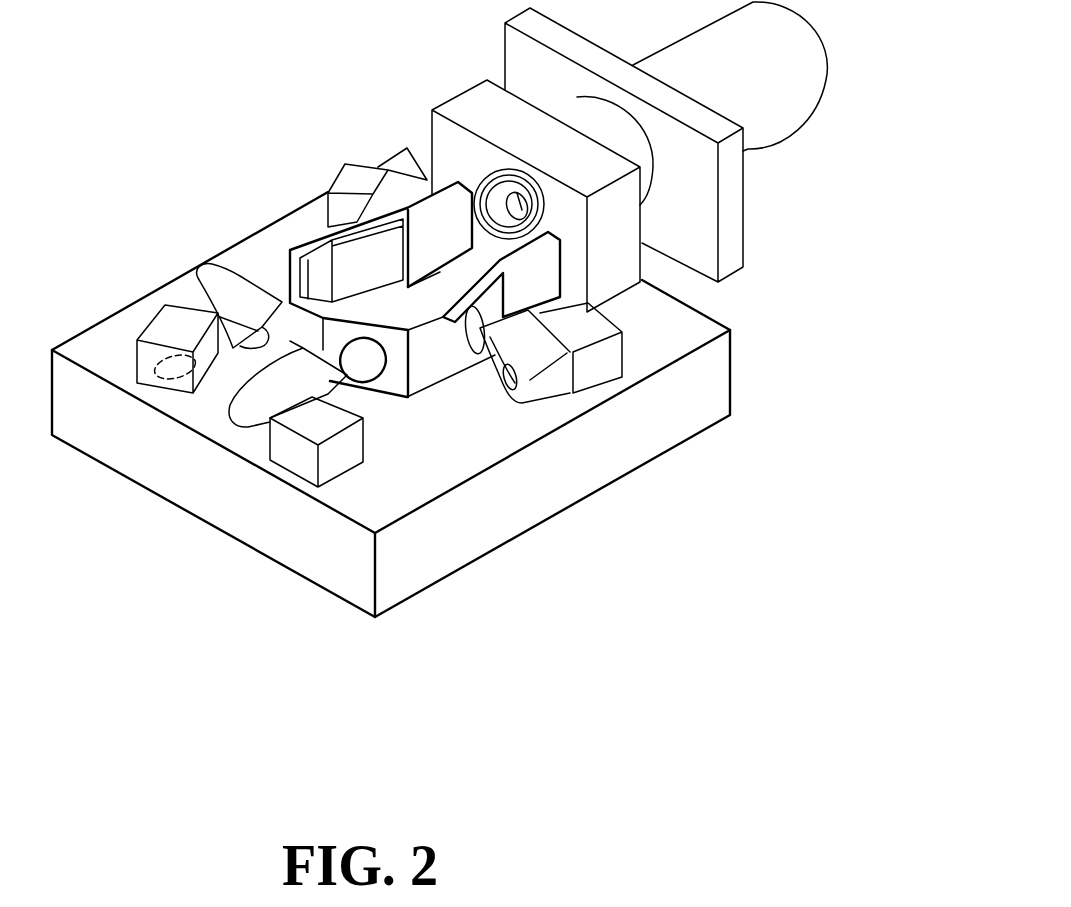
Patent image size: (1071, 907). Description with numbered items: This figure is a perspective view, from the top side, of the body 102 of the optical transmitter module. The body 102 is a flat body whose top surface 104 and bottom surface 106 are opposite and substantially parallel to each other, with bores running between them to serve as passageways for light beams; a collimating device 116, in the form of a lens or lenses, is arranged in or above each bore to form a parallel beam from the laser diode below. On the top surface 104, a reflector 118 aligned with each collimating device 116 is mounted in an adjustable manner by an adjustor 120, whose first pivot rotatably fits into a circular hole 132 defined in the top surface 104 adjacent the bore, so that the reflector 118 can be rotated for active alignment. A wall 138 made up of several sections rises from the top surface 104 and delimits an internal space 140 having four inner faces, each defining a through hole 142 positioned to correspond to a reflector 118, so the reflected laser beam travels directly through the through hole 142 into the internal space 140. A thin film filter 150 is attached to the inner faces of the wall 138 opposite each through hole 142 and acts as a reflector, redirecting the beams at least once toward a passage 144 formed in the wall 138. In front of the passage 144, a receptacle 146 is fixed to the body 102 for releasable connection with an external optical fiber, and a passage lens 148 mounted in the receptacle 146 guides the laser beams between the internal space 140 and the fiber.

The body 102 is at (228, 543).
The top surface 104 is at (453, 457).
The bottom surface 106 is at (648, 465).
The collimating device 116 is at (233, 348).
The reflector 118 is at (235, 348).
The adjustor 120 is at (358, 165).
The circular hole 132 is at (170, 373).
The wall 138 is at (433, 370).
The internal space 140 is at (423, 297).
The through hole 142 is at (368, 368).
The passage 144 is at (467, 272).
The receptacle 146 is at (623, 137).
The passage lens 148 is at (520, 210).
The thin film filter 150 is at (500, 286).